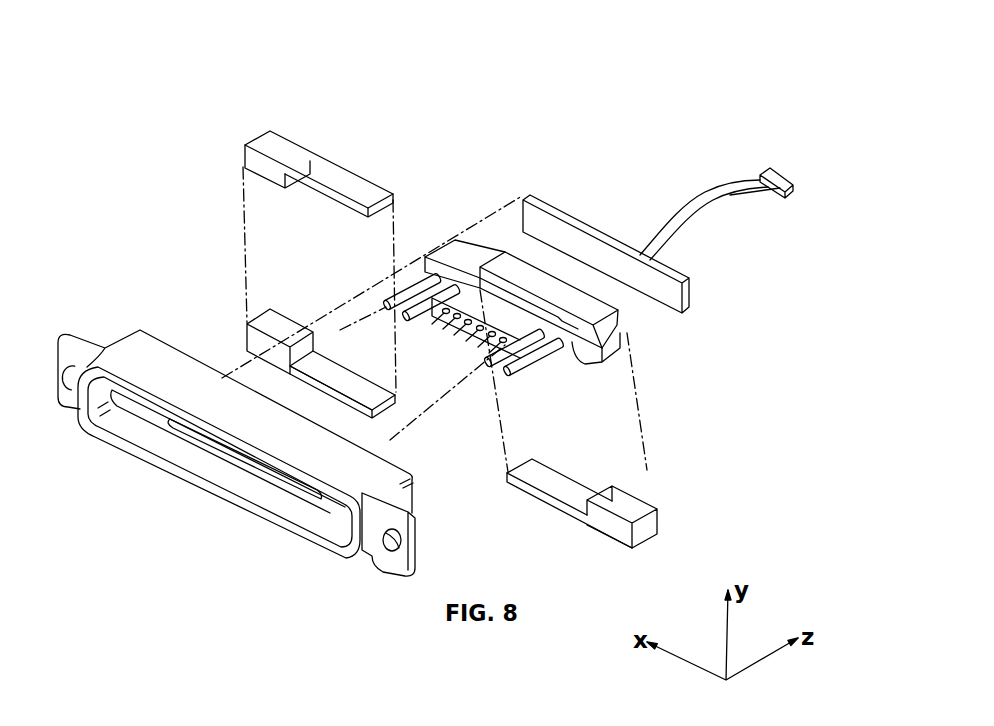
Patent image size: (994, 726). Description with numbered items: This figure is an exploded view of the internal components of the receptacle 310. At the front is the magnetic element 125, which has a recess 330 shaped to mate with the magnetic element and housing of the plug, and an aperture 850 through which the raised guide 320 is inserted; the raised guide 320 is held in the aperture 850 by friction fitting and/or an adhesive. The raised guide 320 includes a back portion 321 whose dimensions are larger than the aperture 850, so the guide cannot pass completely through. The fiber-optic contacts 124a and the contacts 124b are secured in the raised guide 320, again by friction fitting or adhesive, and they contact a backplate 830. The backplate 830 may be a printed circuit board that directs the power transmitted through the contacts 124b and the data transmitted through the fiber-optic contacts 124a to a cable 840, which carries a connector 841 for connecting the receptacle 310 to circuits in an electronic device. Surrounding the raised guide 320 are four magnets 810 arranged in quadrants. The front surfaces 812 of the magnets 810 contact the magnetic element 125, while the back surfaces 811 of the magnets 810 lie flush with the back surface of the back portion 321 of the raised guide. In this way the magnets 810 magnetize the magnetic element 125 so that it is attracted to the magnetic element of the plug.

The receptacle 310 is at (710, 97).
The magnetic element 125 is at (117, 445).
The recess 330 is at (340, 522).
The aperture 850 is at (253, 468).
The magnets 810 is at (248, 150).
The back surfaces of the magnets 811 is at (300, 142).
The front surfaces of the magnets 812 is at (325, 190).
The raised guide 320 is at (570, 358).
The back portion 321 is at (460, 250).
The fiber-optic contacts 124a is at (505, 375).
The contacts 124b is at (450, 340).
The backplate 830 is at (598, 225).
The cable 840 is at (738, 192).
The connector 841 is at (777, 176).